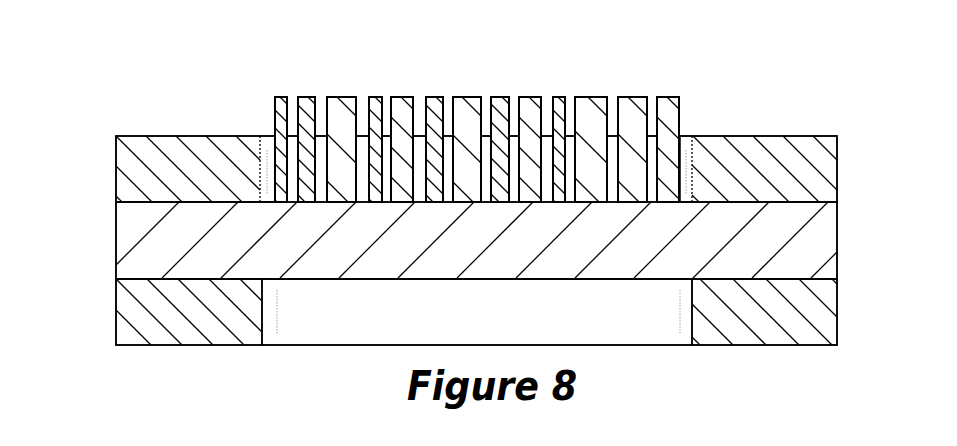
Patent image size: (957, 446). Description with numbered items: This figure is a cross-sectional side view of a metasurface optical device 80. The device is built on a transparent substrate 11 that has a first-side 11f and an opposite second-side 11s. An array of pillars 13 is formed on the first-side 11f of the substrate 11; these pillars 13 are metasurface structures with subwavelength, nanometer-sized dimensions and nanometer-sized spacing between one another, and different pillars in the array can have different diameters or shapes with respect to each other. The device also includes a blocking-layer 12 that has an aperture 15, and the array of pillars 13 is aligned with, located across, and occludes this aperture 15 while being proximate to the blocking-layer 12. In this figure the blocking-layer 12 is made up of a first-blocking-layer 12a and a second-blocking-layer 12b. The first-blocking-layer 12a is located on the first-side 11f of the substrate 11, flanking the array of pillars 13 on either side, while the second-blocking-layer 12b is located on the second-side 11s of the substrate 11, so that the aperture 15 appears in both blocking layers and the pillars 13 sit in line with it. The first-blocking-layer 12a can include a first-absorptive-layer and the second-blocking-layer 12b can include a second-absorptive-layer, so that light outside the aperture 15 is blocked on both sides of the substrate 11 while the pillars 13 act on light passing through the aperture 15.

The metasurface optical device 80 is at (133, 75).
The substrate 11 is at (492, 253).
The first-side 11f is at (723, 204).
The second-side 11s is at (768, 278).
The blocking-layer 12 is at (777, 182).
The first-blocking-layer 12a is at (214, 181).
The second-blocking-layer 12b is at (212, 327).
The array of pillars 13 is at (688, 116).
The aperture 15 is at (275, 97).